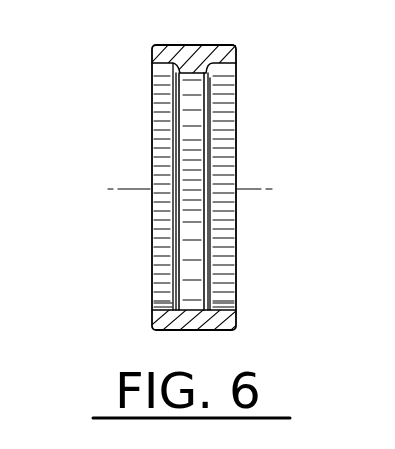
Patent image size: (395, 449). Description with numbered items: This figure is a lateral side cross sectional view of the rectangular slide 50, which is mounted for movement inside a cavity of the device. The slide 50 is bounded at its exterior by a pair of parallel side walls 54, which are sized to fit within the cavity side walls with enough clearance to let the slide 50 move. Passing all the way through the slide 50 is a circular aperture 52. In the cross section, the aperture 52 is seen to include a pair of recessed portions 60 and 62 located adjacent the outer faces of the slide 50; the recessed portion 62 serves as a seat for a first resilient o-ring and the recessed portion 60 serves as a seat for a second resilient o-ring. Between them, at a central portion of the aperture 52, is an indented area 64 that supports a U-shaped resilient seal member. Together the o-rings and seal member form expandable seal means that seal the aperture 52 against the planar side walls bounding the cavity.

The slide 50 is at (124, 44).
The circular aperture 52 is at (156, 146).
The side walls 54 is at (199, 46).
The recessed portion 60 is at (158, 313).
The recessed portion 62 is at (232, 312).
The indented area 64 is at (196, 297).